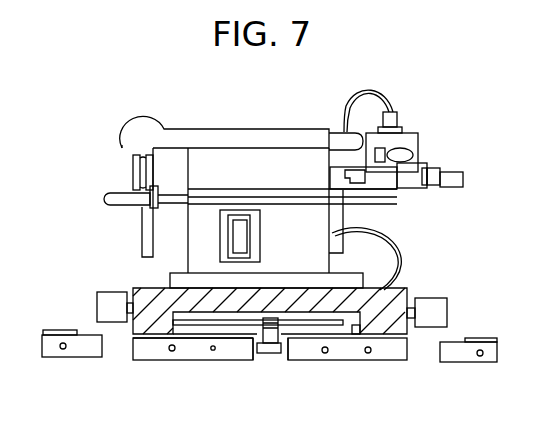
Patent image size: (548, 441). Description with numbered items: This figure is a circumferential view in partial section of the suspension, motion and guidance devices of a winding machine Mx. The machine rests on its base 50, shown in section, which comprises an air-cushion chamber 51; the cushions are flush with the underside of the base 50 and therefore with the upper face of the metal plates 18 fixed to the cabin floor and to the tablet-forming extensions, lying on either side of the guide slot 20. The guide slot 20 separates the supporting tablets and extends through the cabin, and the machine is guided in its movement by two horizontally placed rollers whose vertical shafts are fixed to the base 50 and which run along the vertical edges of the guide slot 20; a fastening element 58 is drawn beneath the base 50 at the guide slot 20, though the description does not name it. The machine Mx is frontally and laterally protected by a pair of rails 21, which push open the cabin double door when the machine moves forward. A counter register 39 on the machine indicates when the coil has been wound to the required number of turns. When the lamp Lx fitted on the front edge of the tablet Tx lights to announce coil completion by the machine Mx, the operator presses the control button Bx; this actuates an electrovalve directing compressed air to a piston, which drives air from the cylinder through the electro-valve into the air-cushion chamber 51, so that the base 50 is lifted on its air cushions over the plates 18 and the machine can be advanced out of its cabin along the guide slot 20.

The winding machine Mx is at (187, 117).
The air-cushion chamber 51 is at (145, 308).
The base 50 is at (397, 290).
The rails 21 is at (447, 311).
The counter register 39 is at (255, 250).
The metal plates 18 is at (158, 334).
The clamping bolt 58 is at (263, 354).
The guide slot 20 is at (283, 366).
The lamp Lx is at (322, 354).
The control button Bx is at (372, 354).
The tablet Tx is at (410, 355).